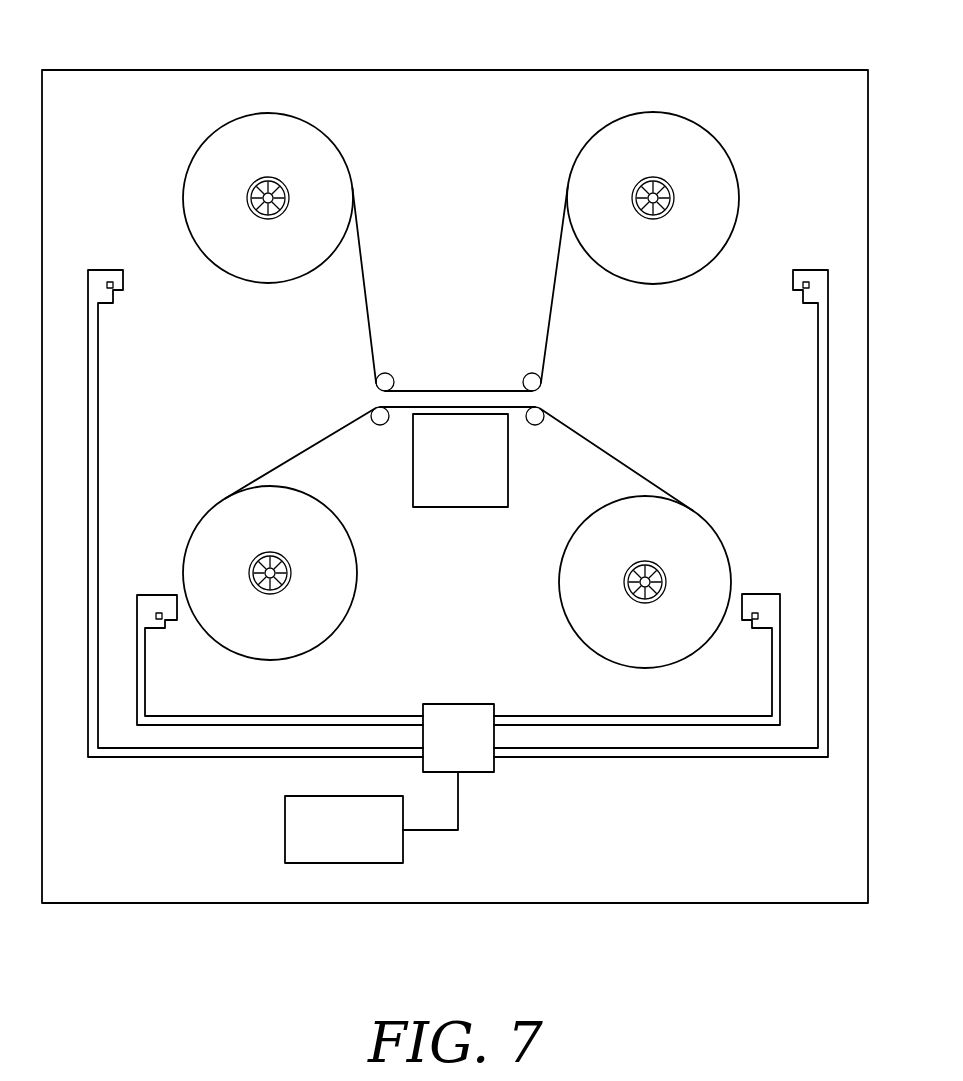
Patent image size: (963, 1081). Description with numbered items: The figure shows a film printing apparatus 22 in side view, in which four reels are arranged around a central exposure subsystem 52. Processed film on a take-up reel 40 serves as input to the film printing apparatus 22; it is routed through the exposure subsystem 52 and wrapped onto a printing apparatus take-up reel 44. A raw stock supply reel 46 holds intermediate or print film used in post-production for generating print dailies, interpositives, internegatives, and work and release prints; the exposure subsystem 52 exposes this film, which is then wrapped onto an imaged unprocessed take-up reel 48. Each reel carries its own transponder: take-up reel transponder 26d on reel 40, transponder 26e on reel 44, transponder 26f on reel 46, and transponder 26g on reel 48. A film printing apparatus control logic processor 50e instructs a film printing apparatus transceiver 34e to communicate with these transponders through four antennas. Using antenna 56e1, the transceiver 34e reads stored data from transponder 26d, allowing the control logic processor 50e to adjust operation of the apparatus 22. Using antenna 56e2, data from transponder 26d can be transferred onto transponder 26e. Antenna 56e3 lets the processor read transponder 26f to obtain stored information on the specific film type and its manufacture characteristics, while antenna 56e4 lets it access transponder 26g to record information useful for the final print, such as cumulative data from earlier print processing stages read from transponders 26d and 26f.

The film printing apparatus 22 is at (525, 70).
The take-up reel 40 is at (185, 207).
The printing apparatus take-up reel 44 is at (728, 148).
The raw stock supply reel 46 is at (215, 505).
The imaged unprocessed take-up reel 48 is at (725, 535).
The take-up reel transponder 26d is at (267, 178).
The printing apparatus take-up reel transponder 26e is at (645, 177).
The raw stock supply reel transponder 26f is at (258, 555).
The imaged unprocessed take-up reel transponder 26g is at (642, 557).
The exposure subsystem 52 is at (448, 507).
The antenna 56e1 is at (98, 347).
The antenna 56e2 is at (817, 375).
The antenna 56e3 is at (333, 715).
The antenna 56e4 is at (575, 715).
The film printing apparatus transceiver 34e is at (480, 773).
The film printing apparatus control logic processor 50e is at (285, 828).